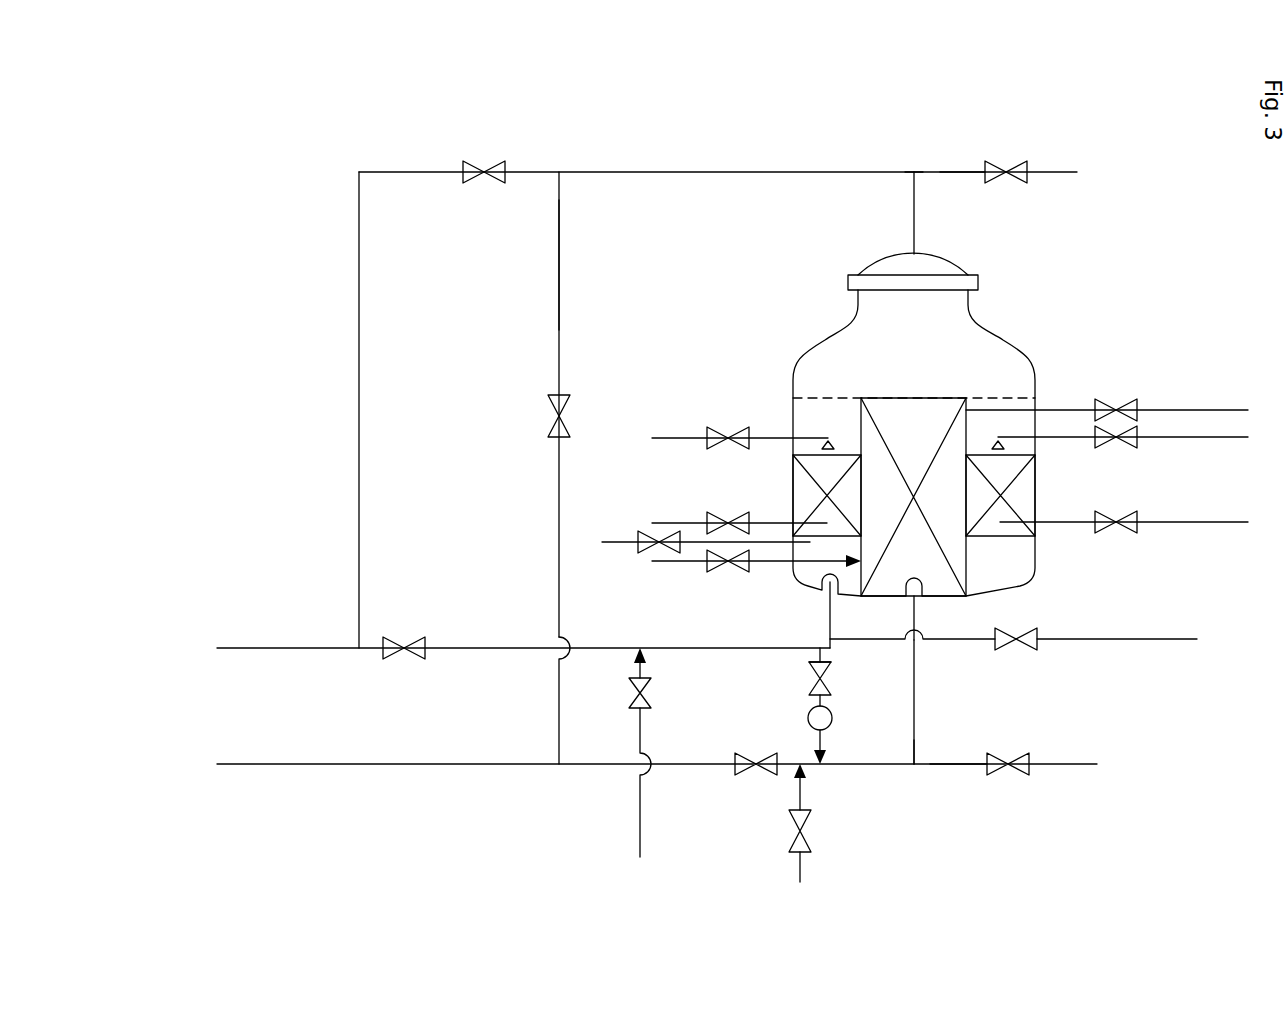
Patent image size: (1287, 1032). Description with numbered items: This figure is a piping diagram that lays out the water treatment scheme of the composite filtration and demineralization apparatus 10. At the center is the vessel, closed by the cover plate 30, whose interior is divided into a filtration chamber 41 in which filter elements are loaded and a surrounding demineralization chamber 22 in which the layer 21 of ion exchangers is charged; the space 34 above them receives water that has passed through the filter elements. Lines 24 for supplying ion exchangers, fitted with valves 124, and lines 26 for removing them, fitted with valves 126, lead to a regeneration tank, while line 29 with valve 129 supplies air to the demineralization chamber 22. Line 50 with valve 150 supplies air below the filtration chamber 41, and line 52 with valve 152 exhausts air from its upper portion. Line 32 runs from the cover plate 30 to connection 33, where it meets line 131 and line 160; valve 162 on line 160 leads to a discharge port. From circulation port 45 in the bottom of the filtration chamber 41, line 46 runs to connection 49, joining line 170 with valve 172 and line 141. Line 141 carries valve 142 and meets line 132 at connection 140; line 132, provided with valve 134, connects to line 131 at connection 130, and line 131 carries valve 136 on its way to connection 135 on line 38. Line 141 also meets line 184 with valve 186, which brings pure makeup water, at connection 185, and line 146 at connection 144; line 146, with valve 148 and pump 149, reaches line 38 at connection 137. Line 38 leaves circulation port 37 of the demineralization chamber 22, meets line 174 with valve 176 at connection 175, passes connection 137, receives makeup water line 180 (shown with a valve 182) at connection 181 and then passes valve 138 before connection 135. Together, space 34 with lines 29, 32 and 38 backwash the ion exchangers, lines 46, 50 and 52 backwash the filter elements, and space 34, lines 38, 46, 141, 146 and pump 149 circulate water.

The composite filtration and demineralization apparatus 10 is at (1120, 230).
The layer of charged ion exchangers 21 is at (823, 470).
The demineralization chamber 22 is at (790, 426).
The lines for supplying ion exchangers 24 is at (675, 438).
The lines for removing ion exchangers 26 is at (675, 523).
The air supply line 29 is at (613, 542).
The cover plate 30 is at (948, 258).
The line 32 is at (916, 190).
The connection 33 is at (914, 172).
The space 34 is at (901, 366).
The circulation port 37 is at (822, 590).
The line 38 is at (735, 650).
The filtration chamber 41 is at (901, 439).
The circulation port 45 is at (925, 596).
The line 46 is at (916, 685).
The connection 49 is at (914, 766).
The air supply line 50 is at (677, 563).
The air exhaust line 52 is at (1063, 410).
The valves 124 is at (715, 430).
The valves 126 is at (715, 514).
The valve 129 is at (648, 554).
The connection 130 is at (559, 172).
The line 131 is at (836, 172).
The line 132 is at (559, 262).
The valve 134 is at (548, 415).
The connection 135 is at (359, 650).
The valve 136 is at (478, 161).
The connection 137 is at (820, 650).
The valve 138 is at (393, 637).
The connection 140 is at (559, 766).
The line 141 is at (875, 766).
The valve 142 is at (765, 771).
The connection 144 is at (820, 766).
The line 146 is at (832, 661).
The valve 148 is at (830, 684).
The pump 149 is at (832, 718).
The valve 150 is at (718, 574).
The valve 152 is at (1113, 400).
The line 160 is at (962, 172).
The valve 162 is at (1012, 162).
The line 170 is at (957, 766).
The valve 172 is at (1015, 773).
The line 174 is at (1130, 641).
The connection 175 is at (840, 639).
The valve 176 is at (1025, 651).
The line 180 is at (642, 813).
The connection 181 is at (640, 646).
The inlet valve 182 is at (652, 693).
The line 184 is at (802, 870).
The connection 185 is at (800, 762).
The valve 186 is at (812, 822).